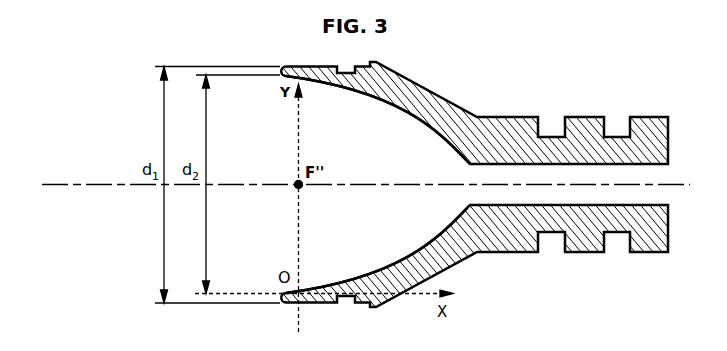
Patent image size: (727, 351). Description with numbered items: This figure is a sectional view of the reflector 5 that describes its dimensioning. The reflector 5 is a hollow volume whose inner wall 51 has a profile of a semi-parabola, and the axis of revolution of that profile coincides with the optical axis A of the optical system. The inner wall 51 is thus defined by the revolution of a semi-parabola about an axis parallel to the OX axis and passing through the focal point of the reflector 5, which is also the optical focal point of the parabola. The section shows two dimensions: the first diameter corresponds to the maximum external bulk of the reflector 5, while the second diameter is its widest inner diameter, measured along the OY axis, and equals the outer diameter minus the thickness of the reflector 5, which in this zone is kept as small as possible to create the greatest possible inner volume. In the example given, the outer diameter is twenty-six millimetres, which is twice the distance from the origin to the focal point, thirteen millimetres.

The reflector 5 is at (423, 106).
The inner wall 51 is at (423, 127).
The optical axis A is at (55, 185).